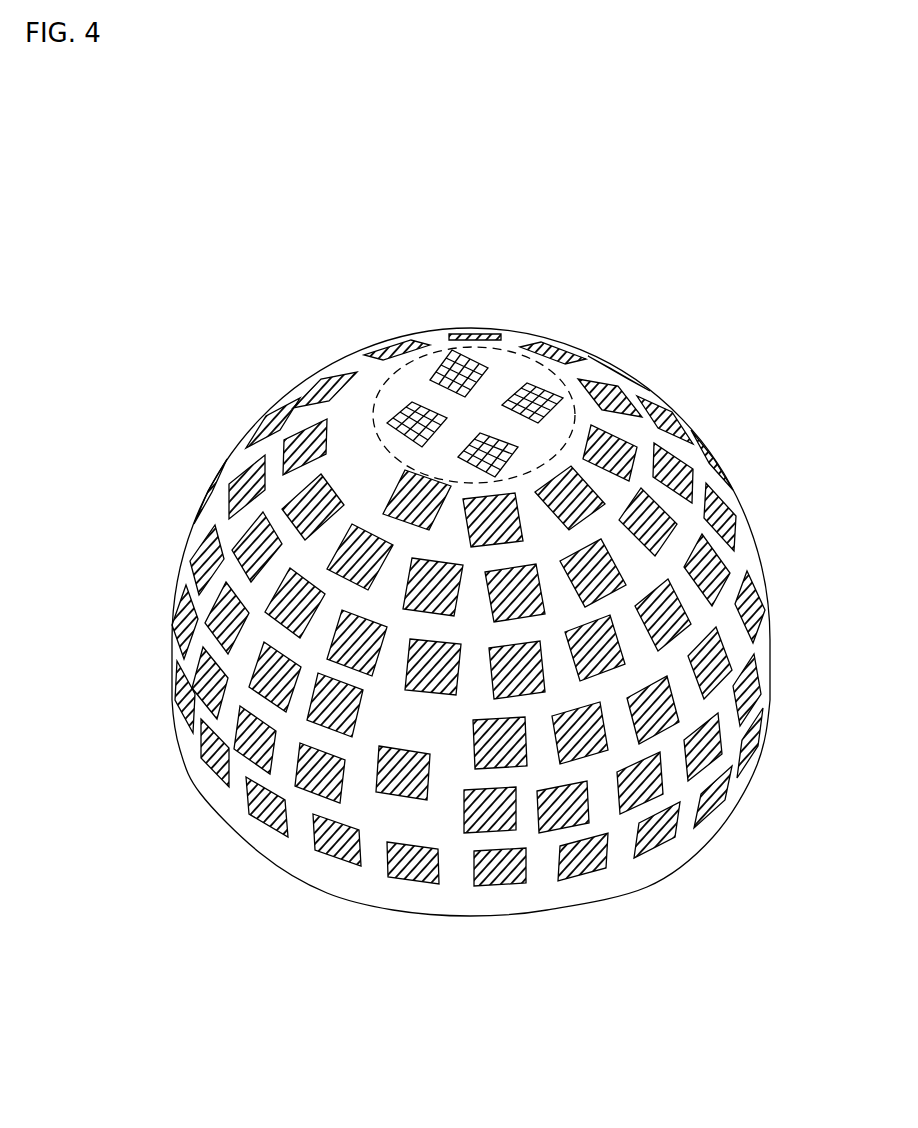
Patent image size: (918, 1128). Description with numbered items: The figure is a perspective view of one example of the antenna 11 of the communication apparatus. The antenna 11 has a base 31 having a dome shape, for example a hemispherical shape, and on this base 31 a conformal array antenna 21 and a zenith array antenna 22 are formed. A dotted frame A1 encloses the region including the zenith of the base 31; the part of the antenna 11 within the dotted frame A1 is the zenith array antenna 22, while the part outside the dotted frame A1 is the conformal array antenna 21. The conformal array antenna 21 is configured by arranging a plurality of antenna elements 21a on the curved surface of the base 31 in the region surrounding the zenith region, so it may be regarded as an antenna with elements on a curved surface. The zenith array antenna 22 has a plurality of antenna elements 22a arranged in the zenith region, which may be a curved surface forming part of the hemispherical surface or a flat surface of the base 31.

The antenna 11 is at (530, 237).
The conformal array antenna 21 is at (474, 642).
The antenna element 21a is at (336, 858).
The zenith array antenna 22 is at (468, 380).
The antenna element 22a is at (432, 357).
The base 31 is at (623, 878).
The dotted frame A1 is at (387, 388).